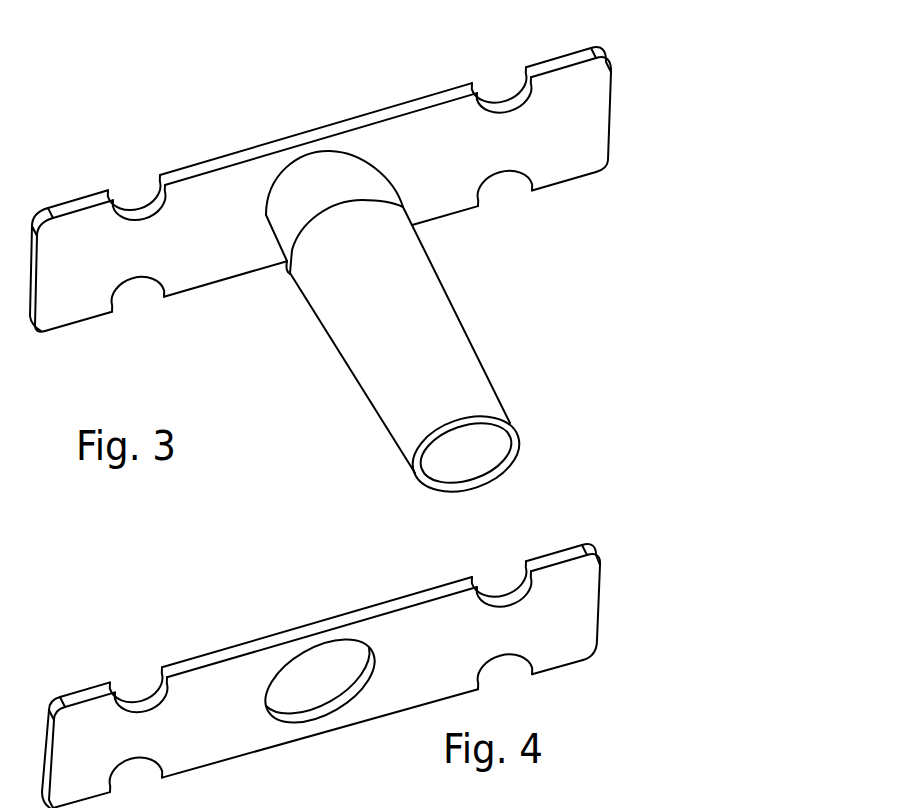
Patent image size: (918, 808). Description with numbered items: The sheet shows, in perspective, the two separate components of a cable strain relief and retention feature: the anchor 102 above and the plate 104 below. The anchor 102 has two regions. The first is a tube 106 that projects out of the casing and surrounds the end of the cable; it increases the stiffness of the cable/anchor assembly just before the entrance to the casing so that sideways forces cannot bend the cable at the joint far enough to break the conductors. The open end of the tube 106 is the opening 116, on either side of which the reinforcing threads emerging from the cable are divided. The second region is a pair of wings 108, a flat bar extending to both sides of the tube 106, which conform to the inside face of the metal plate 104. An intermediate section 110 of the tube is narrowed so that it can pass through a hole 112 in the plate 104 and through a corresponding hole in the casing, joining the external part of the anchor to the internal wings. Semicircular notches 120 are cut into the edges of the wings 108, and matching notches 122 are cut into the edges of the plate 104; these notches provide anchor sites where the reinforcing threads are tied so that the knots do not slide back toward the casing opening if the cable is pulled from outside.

In FIG. 3, the anchor 102 is at (486, 304).
In FIG. 4, the plate 104 is at (560, 612).
In FIG. 3, the tube 106 is at (362, 347).
In FIG. 3, the wings 108 is at (107, 270).
In FIG. 3, the intermediate section 110 is at (290, 196).
In FIG. 4, the hole 112 is at (285, 672).
In FIG. 3, the opening 116 is at (467, 455).
In FIG. 3, the notches 120 is at (145, 210).
In FIG. 4, the notches 122 is at (145, 702).